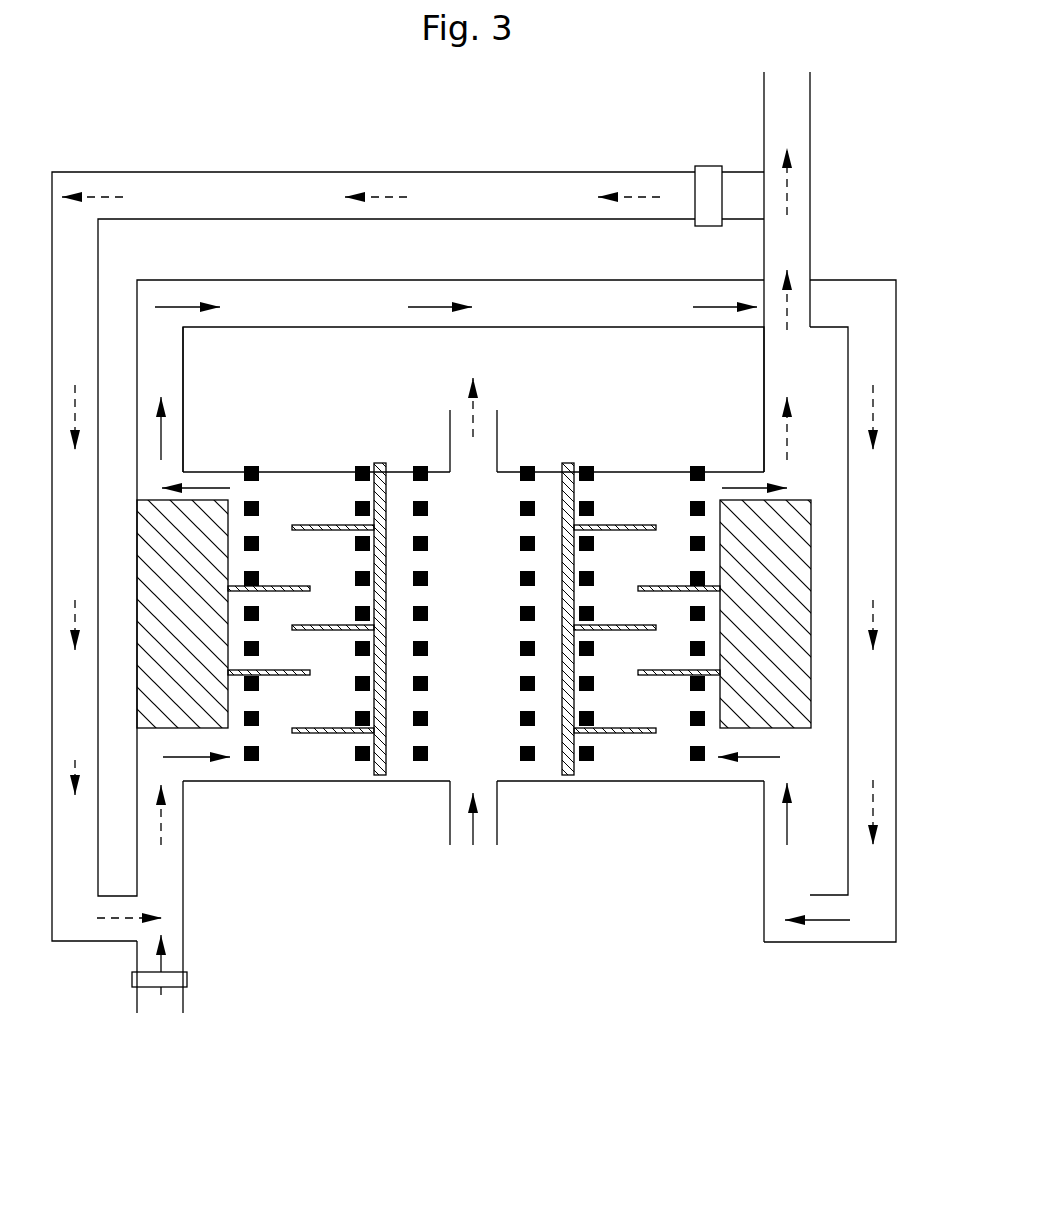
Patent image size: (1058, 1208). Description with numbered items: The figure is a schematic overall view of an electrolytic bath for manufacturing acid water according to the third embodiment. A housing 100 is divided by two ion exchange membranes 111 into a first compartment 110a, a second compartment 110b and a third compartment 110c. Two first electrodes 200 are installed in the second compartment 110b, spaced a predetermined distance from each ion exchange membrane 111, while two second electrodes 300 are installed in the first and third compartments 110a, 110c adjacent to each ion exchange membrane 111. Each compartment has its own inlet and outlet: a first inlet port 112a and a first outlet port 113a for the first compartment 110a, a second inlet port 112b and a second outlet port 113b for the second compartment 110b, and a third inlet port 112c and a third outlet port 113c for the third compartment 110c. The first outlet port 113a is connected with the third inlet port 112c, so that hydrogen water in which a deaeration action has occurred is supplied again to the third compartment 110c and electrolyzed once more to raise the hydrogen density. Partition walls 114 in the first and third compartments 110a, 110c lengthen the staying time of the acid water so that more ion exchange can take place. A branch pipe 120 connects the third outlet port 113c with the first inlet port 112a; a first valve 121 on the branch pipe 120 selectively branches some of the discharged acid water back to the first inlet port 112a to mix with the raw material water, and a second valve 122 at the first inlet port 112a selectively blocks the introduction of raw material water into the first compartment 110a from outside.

The housing 100 is at (360, 782).
The first compartment 110a is at (285, 490).
The second compartment 110b is at (410, 772).
The third compartment 110c is at (672, 492).
The ion exchange membrane 111 is at (380, 460).
The first inlet port 112a is at (168, 1000).
The second inlet port 112b is at (492, 827).
The third inlet port 112c is at (786, 904).
The first outlet port 113a is at (158, 367).
The second outlet port 113b is at (470, 420).
The third outlet port 113c is at (787, 150).
The partition wall 114 is at (322, 525).
The branch pipe 120 is at (453, 197).
The first valve 121 is at (705, 175).
The second valve 122 is at (188, 978).
The first electrode 200 is at (528, 453).
The second electrode 300 is at (704, 447).